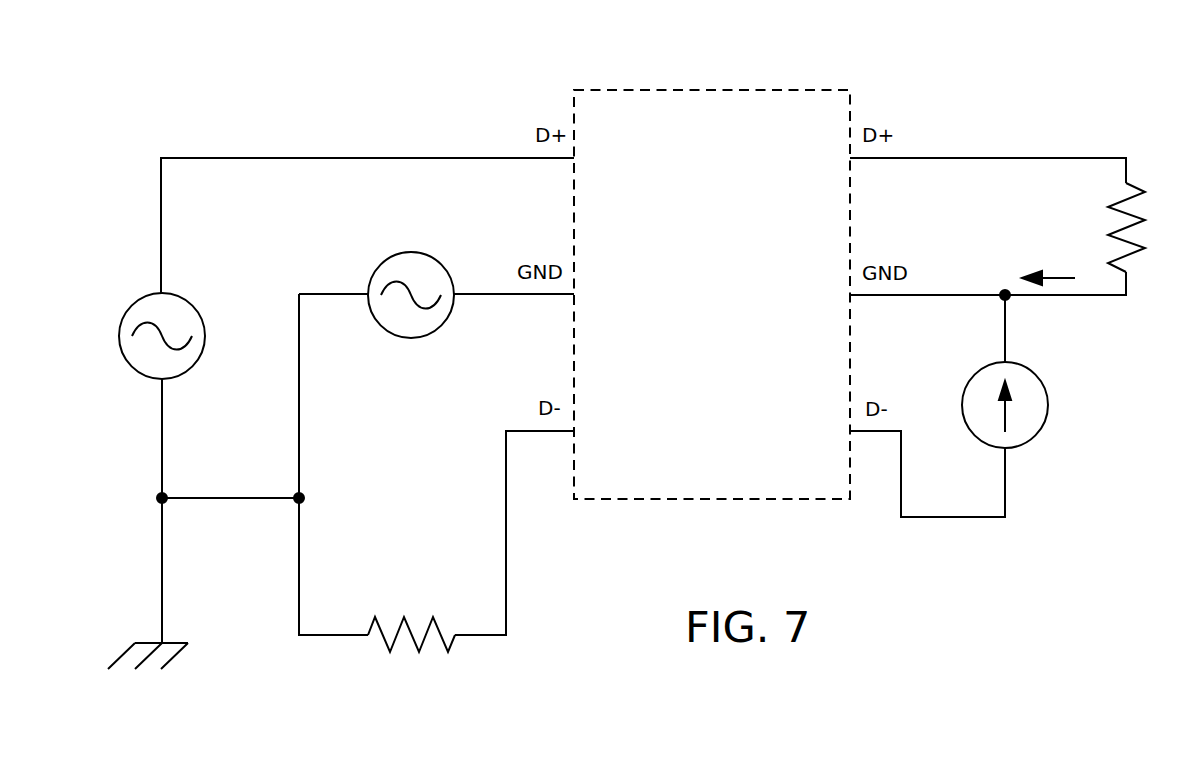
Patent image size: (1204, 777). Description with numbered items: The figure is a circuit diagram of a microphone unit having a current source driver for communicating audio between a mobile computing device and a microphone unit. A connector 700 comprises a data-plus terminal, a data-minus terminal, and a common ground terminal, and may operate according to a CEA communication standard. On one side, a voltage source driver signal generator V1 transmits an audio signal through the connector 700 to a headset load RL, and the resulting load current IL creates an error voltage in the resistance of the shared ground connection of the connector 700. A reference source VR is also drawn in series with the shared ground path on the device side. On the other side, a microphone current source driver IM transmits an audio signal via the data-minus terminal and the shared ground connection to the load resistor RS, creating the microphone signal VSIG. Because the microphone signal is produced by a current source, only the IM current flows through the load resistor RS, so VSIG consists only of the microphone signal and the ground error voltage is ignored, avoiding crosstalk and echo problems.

The connector 700 is at (815, 89).
The voltage source driver signal generator V1 is at (162, 320).
The reference voltage source VR is at (411, 273).
The load resistor RS is at (411, 620).
The microphone signal VSIG is at (363, 663).
The headset load RL is at (1143, 227).
The load current IL is at (1048, 266).
The microphone current source driver IM is at (1022, 405).